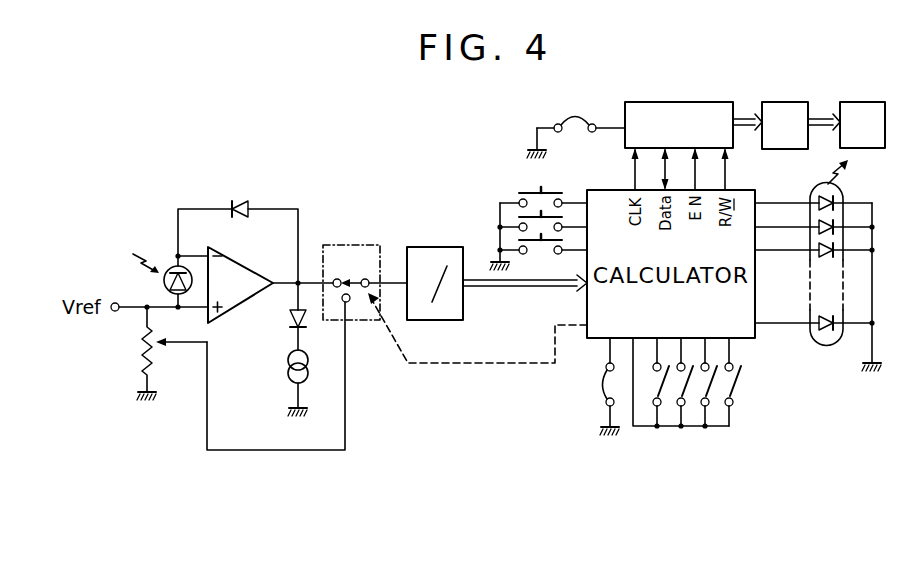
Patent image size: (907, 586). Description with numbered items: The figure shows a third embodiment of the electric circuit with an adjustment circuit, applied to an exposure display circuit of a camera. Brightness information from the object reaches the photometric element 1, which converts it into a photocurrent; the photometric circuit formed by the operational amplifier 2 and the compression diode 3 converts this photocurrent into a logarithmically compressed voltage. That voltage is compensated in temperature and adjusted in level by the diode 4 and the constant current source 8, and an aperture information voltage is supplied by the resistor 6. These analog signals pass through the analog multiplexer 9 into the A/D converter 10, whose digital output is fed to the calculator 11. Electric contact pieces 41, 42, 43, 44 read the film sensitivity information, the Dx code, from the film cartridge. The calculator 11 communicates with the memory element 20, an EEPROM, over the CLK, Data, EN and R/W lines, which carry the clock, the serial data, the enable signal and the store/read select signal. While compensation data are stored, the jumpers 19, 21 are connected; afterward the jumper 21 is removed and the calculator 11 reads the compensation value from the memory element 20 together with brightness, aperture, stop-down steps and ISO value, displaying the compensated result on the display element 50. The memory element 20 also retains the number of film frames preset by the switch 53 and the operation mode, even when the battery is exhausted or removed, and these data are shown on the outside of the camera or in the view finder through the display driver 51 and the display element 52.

The photometric element 1 is at (165, 282).
The operational amplifier 2 is at (244, 273).
The compression diode 3 is at (239, 201).
The diode for compensating temperature 4 is at (291, 316).
The resistor 6 is at (142, 354).
The constant current source 8 is at (289, 357).
The analog multiplexer 9 is at (351, 245).
The A/D converter 10 is at (439, 252).
The calculator 11 is at (587, 303).
The jumper 19 is at (566, 121).
The memory element 20 is at (639, 109).
The jumper 21 is at (602, 391).
The electric contact piece 41 is at (664, 386).
The electric contact piece 42 is at (688, 386).
The electric contact piece 43 is at (712, 386).
The electric contact piece 44 is at (738, 383).
The display element 50 is at (845, 189).
The display driver 51 is at (778, 108).
The display element 52 is at (862, 108).
The switch 53 is at (512, 197).